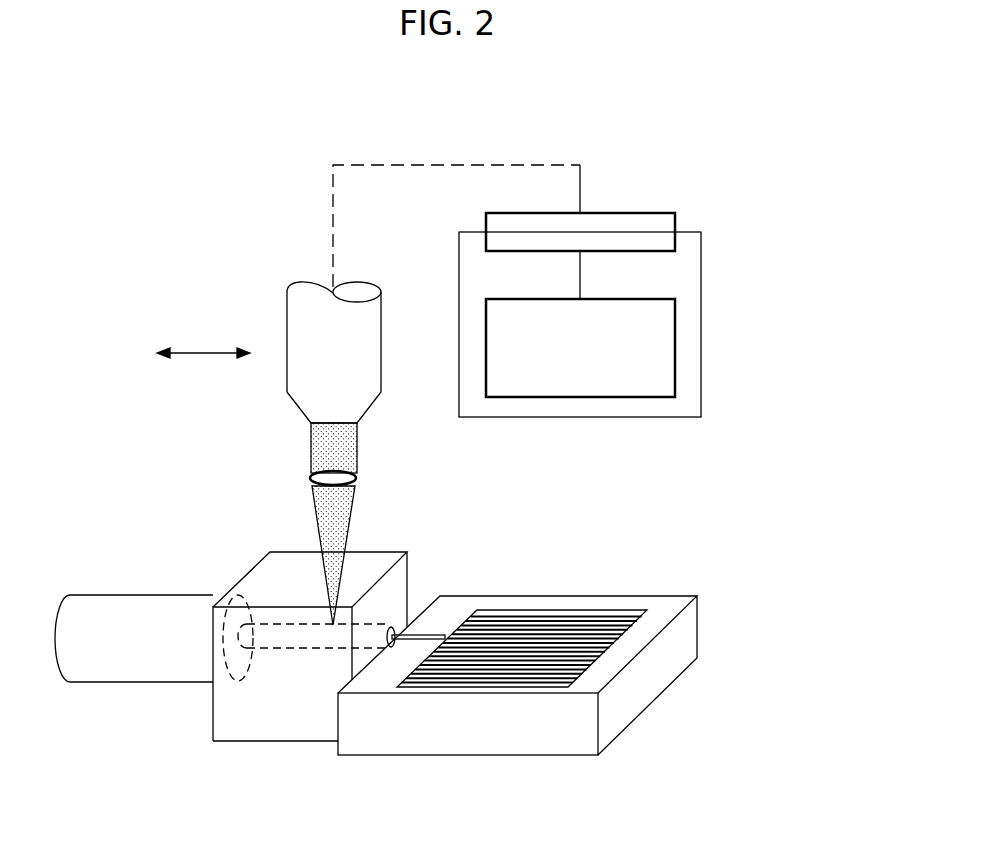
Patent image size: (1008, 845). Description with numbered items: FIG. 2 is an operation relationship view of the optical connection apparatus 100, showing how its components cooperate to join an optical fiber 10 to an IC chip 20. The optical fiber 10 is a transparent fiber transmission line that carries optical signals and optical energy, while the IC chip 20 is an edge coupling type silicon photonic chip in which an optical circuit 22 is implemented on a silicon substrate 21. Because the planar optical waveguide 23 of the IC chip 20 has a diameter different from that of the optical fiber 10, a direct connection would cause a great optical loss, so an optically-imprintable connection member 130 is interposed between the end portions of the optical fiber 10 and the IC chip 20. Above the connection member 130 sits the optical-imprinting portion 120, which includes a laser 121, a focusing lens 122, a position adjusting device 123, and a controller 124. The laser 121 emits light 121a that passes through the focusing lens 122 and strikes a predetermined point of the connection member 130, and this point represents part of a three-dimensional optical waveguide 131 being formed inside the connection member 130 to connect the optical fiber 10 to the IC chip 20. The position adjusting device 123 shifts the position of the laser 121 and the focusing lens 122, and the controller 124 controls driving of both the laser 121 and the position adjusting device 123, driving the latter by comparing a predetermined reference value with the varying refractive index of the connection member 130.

The optical connection apparatus 100 is at (666, 272).
The controller 124 is at (677, 221).
The position adjusting device 123 is at (677, 317).
The optical-imprinting portion 120 is at (313, 421).
The laser 121 is at (343, 370).
The light 121a is at (310, 445).
The focusing lens 122 is at (357, 477).
The connection member 130 is at (307, 632).
The three-dimensional optical waveguide 131 is at (273, 648).
The optical fiber 10 is at (130, 650).
The IC chip 20 is at (582, 645).
The silicon substrate 21 is at (665, 665).
The optical circuit 22 is at (577, 623).
The planar optical waveguide 23 is at (427, 635).